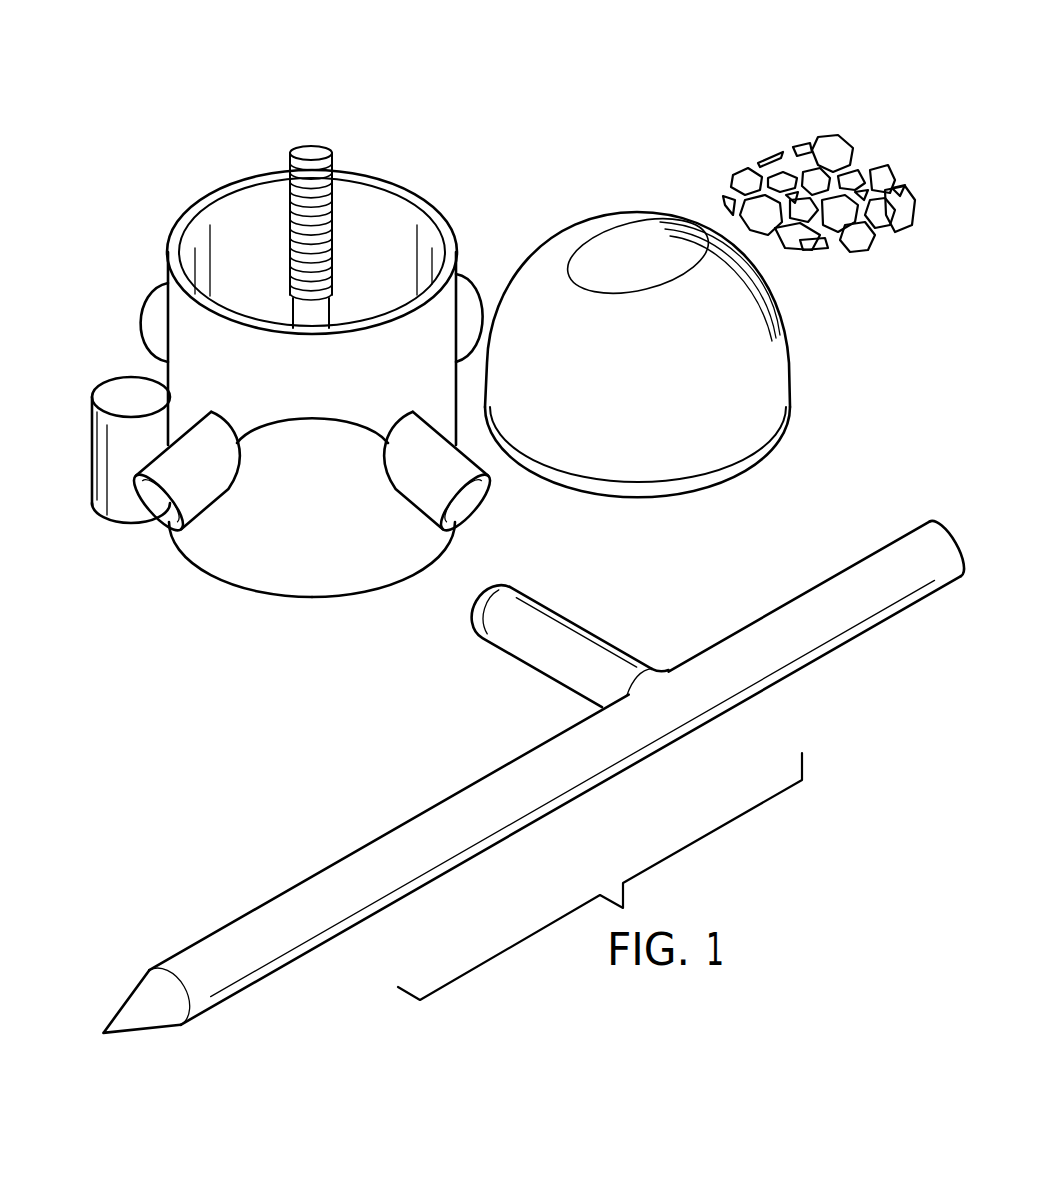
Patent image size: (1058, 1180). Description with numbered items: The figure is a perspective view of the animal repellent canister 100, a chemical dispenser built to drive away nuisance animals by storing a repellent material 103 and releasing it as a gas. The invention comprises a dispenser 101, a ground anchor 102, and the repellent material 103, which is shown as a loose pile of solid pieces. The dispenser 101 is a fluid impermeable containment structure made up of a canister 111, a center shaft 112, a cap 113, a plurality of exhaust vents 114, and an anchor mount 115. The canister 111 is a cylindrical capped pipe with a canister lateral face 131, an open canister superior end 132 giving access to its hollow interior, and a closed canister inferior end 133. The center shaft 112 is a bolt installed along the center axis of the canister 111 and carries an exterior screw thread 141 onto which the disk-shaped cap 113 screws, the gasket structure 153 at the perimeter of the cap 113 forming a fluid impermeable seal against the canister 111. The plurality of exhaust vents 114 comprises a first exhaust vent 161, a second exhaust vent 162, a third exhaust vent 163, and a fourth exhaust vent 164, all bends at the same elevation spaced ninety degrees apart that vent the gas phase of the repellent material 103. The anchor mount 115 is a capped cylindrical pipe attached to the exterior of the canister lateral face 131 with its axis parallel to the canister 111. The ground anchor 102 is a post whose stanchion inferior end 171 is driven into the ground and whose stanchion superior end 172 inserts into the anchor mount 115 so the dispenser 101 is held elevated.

The animal repellent canister 100 is at (111, 75).
The dispenser 101 is at (455, 253).
The ground anchor 102 is at (873, 555).
The repellent material 103 is at (856, 163).
The canister 111 is at (357, 195).
The center shaft 112 is at (312, 152).
The cap 113 is at (793, 403).
The plurality of exhaust vents 114 is at (311, 418).
The anchor mount 115 is at (102, 448).
The canister lateral face 131 is at (307, 552).
The canister superior end 132 is at (257, 172).
The canister inferior end 133 is at (247, 588).
The exterior screw thread 141 is at (328, 253).
The gasket structure 153 is at (627, 497).
The first exhaust vent 161 is at (474, 484).
The second exhaust vent 162 is at (480, 305).
The third exhaust vent 163 is at (150, 298).
The fourth exhaust vent 164 is at (172, 492).
The stanchion inferior end 171 is at (137, 1034).
The stanchion superior end 172 is at (932, 522).